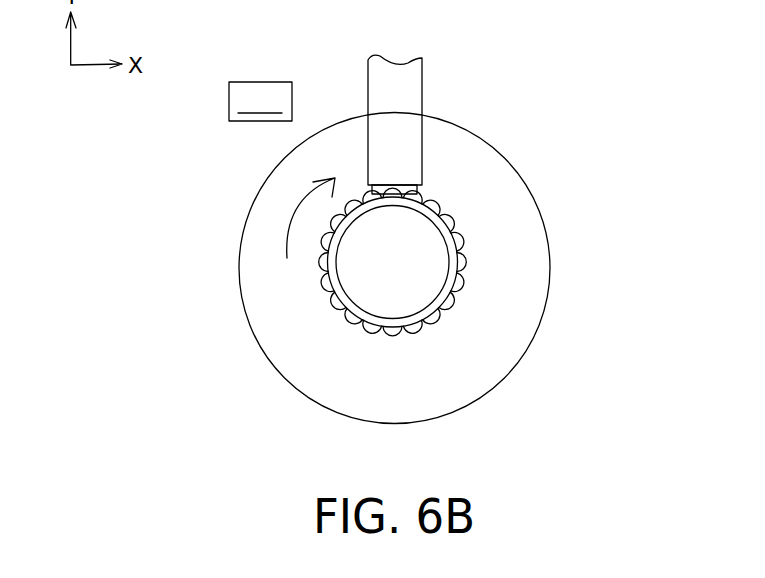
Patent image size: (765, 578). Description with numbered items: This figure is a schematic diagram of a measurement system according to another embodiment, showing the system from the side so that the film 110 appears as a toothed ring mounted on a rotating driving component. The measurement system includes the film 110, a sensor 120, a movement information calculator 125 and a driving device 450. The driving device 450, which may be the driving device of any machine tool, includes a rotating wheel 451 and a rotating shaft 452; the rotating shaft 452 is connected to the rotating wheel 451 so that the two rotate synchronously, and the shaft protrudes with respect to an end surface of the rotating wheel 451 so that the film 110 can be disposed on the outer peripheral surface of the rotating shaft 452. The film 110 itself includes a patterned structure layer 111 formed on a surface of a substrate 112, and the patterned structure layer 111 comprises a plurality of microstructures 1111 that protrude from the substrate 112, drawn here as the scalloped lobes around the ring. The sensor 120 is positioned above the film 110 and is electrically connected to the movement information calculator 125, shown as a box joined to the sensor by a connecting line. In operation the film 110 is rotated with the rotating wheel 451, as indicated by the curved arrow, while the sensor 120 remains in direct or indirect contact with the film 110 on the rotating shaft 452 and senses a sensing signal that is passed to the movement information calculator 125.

The movement information calculator 125 is at (368, 190).
The microstructure 1111 is at (422, 113).
The sensor 120 is at (422, 188).
The driving device 450 is at (146, 203).
The rotating wheel 451 is at (268, 223).
The rotating shaft 452 is at (358, 288).
The film 110 is at (202, 375).
The substrate 112 is at (365, 325).
The patterned structure layer 111 is at (393, 335).